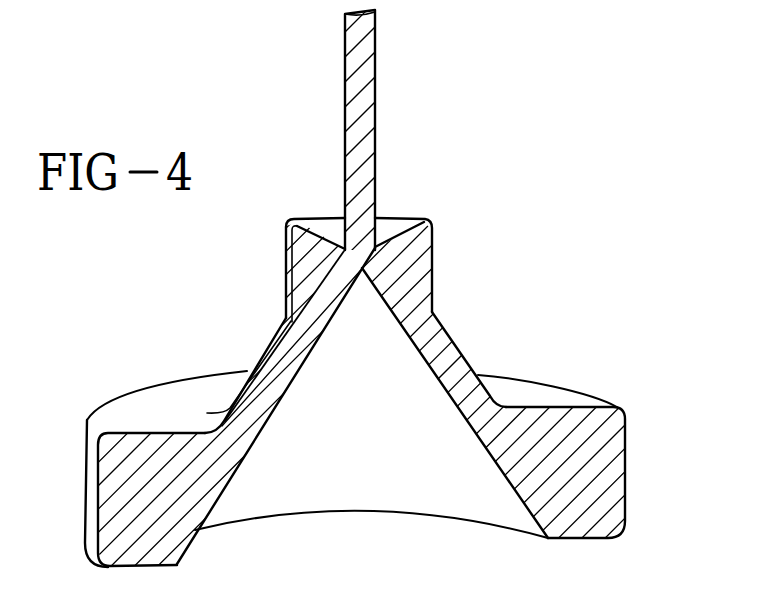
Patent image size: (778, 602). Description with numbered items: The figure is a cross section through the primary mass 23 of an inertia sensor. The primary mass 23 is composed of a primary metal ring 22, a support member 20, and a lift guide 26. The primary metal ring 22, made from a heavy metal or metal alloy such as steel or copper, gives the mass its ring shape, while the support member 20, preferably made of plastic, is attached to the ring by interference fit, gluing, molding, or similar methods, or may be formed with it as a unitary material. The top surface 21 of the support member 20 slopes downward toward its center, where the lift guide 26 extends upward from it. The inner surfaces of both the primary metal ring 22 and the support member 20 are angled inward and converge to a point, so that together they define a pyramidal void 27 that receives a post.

The support member 20 is at (438, 269).
The top surface 21 is at (385, 229).
The primary metal ring 22 is at (598, 470).
The primary mass 23 is at (543, 387).
The lift guide 26 is at (367, 97).
The pyramidal void 27 is at (355, 438).